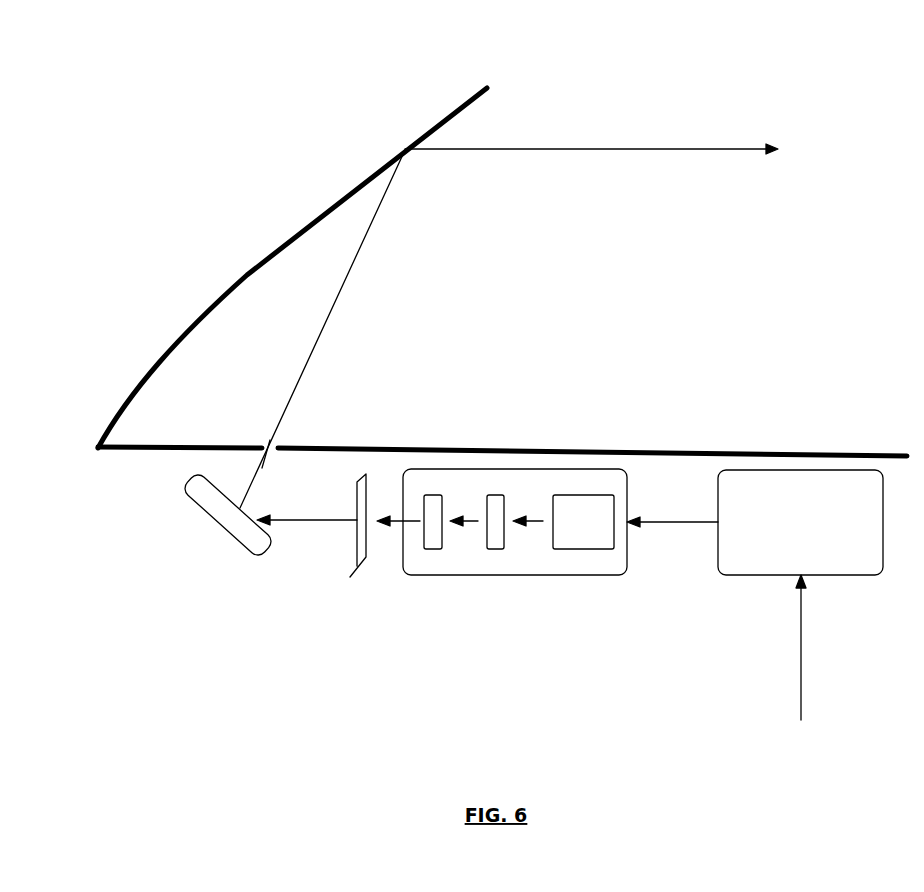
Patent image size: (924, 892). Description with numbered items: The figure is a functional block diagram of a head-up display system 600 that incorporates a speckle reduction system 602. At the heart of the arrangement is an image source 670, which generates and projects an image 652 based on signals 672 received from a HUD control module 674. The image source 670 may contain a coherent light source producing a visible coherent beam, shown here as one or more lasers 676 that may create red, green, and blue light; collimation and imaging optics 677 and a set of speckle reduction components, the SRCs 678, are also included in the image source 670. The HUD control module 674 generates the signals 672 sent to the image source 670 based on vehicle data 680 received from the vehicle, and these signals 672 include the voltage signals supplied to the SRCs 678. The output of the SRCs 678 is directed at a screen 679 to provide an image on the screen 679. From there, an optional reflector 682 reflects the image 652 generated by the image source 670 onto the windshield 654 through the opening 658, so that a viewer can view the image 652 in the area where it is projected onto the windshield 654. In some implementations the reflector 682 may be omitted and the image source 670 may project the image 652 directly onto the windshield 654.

The head-up display system 600 is at (183, 99).
The speckle reduction system 602 is at (234, 627).
The windshield 654 is at (242, 280).
The opening 658 is at (262, 447).
The image 652 is at (360, 250).
The reflector 682 is at (215, 530).
The screen 679 is at (353, 572).
The image source 670 is at (513, 469).
The set of SRCs 678 is at (430, 549).
The collimation and imaging optics 677 is at (488, 550).
The lasers 676 is at (575, 550).
The signals 672 is at (678, 522).
The HUD control module 674 is at (800, 470).
The vehicle data 680 is at (801, 655).